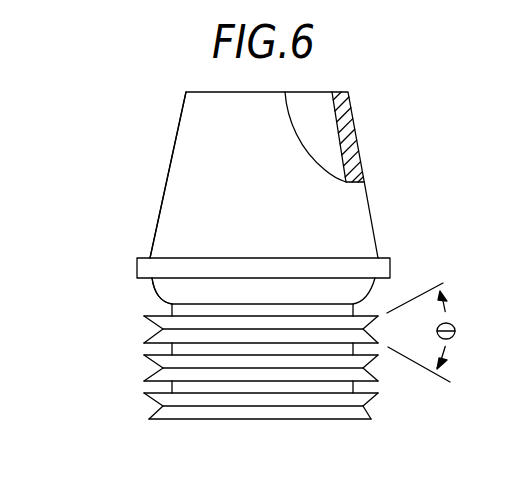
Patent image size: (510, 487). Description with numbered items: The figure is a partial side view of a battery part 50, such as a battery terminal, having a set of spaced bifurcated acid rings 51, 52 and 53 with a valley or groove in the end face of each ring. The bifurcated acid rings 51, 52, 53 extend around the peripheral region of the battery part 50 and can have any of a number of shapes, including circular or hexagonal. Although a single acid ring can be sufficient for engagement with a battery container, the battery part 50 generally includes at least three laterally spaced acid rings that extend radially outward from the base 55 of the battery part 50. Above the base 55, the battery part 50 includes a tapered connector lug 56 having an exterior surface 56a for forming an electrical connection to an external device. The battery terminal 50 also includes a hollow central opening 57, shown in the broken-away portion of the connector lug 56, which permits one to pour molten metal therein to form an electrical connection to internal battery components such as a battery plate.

The battery part 50 is at (340, 212).
The bifurcated acid ring 51 is at (372, 312).
The bifurcated acid ring 52 is at (148, 379).
The bifurcated acid ring 53 is at (150, 417).
The base 55 is at (172, 305).
The connector lug 56 is at (168, 175).
The exterior surface 56a is at (258, 182).
The hollow central opening 57 is at (311, 110).